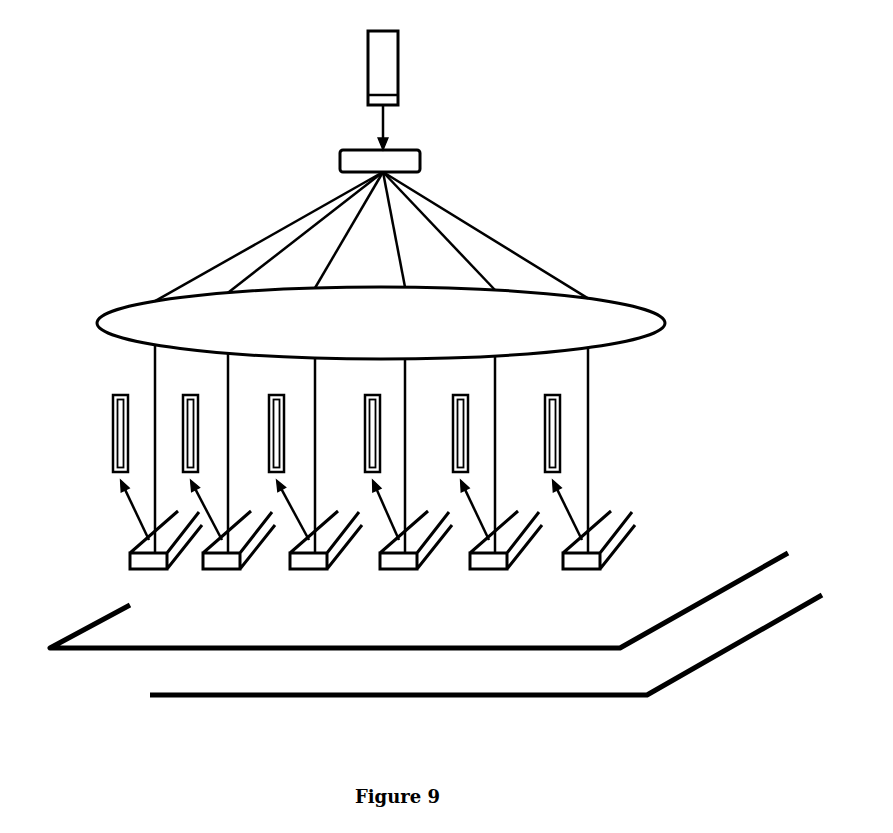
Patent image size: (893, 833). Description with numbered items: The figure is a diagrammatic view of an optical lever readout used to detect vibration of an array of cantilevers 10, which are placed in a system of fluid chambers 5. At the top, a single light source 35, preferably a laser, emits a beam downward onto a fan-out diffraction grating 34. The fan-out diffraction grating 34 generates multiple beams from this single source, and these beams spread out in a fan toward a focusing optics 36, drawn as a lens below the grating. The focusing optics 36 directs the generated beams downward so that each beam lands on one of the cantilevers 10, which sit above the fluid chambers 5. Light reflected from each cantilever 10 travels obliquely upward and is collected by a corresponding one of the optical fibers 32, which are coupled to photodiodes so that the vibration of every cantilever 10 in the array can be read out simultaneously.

The fluid chambers 5 is at (697, 667).
The cantilevers 10 is at (632, 512).
The optical fibers 32 is at (108, 438).
The fan-out diffraction grating 34 is at (420, 152).
The light source 35 is at (366, 60).
The focusing optics 36 is at (637, 303).